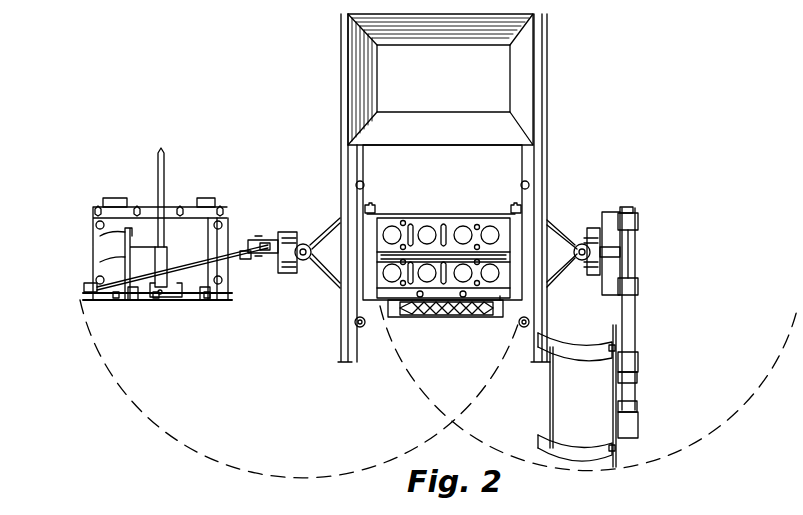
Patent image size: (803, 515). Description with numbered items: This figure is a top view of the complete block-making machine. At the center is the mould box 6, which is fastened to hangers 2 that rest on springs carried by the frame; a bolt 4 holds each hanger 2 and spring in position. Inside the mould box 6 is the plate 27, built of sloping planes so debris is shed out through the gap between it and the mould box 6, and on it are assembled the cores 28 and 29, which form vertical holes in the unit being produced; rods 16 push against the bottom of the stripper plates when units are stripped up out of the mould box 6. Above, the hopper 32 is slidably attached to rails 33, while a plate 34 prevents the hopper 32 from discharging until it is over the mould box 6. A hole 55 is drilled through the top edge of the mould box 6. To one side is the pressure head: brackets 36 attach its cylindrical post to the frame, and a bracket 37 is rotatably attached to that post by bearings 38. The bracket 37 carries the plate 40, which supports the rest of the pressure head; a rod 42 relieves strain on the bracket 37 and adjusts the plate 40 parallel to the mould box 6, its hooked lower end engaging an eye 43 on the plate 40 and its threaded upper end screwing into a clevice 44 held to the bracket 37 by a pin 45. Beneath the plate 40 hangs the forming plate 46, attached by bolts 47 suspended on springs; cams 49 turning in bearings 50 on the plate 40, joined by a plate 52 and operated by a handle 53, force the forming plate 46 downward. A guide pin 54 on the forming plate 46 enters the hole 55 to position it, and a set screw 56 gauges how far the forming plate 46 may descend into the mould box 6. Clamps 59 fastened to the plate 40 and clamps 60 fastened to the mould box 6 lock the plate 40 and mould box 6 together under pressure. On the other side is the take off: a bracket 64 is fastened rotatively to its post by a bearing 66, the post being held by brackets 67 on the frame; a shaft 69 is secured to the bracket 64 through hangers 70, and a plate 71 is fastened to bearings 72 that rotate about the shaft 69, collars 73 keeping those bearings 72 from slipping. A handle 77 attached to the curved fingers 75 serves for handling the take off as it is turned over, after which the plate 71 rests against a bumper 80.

The hangers 2 is at (347, 197).
The bolt 4 is at (356, 185).
The mould box 6 is at (501, 298).
The rods 16 is at (404, 220).
The plate 27 is at (450, 218).
The cores 28 is at (392, 226).
The cores 29 is at (412, 224).
The hopper 32 is at (347, 65).
The rails 33 is at (341, 128).
The plate 34 is at (363, 158).
The brackets 36 is at (292, 216).
The bracket 37 is at (224, 222).
The bearings 38 is at (300, 261).
The plate 40 is at (93, 240).
The rod 42 is at (232, 260).
The eye 43 is at (86, 290).
The clevice 44 is at (247, 259).
The pin 45 is at (265, 243).
The forming plate 46 is at (167, 297).
The bolts 47 is at (97, 223).
The cams 49 is at (127, 240).
The bearings 50 is at (133, 300).
The plate 52 is at (127, 257).
The handle 53 is at (161, 149).
The guide pin 54 is at (137, 209).
The hole 55 is at (464, 298).
The set screw 56 is at (96, 210).
The clamp 59 is at (115, 198).
The clamps 60 is at (365, 208).
The bracket 64 is at (625, 207).
The bearing 66 is at (592, 230).
The brackets 67 is at (556, 278).
The shaft 69 is at (637, 306).
The hangers 70 is at (638, 219).
The plate 71 is at (615, 330).
The bearings 72 is at (638, 360).
The collars 73 is at (638, 410).
The fingers 75 is at (585, 333).
The handle 77 is at (548, 382).
The bumper 80 is at (410, 303).